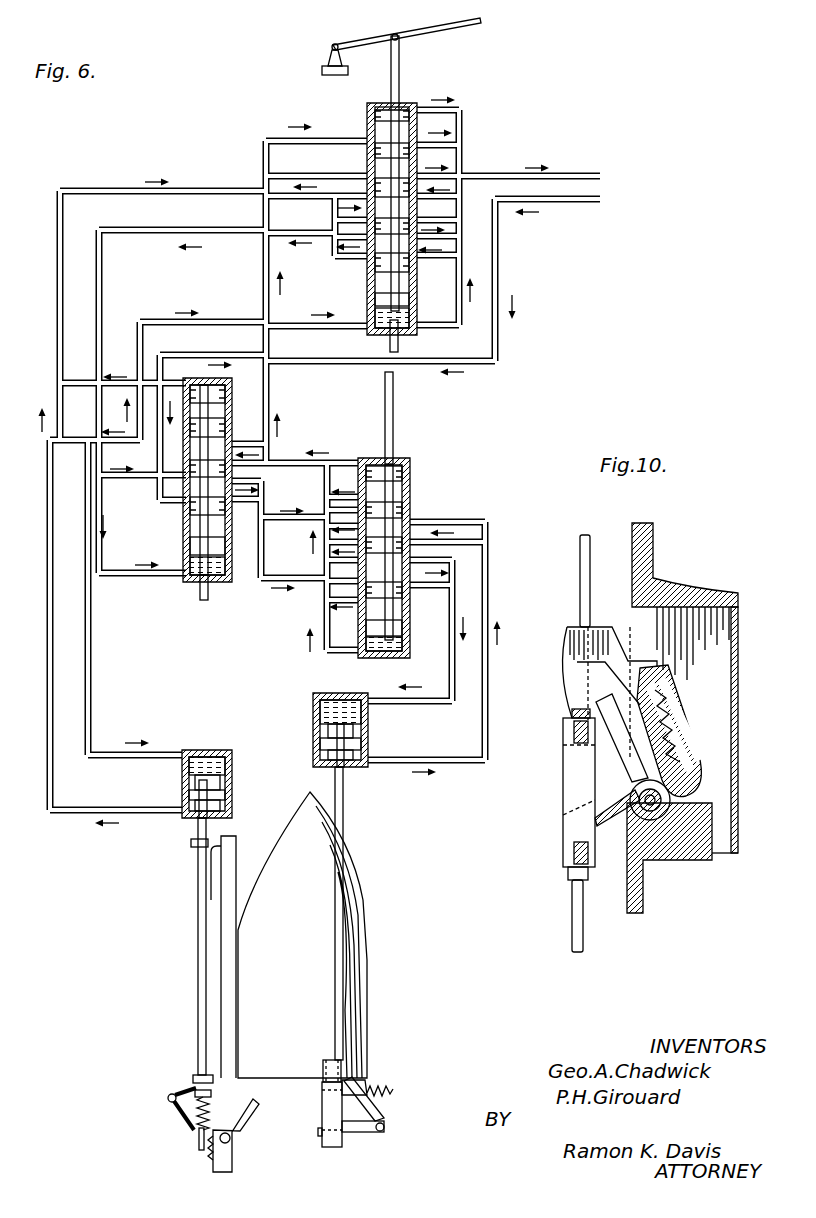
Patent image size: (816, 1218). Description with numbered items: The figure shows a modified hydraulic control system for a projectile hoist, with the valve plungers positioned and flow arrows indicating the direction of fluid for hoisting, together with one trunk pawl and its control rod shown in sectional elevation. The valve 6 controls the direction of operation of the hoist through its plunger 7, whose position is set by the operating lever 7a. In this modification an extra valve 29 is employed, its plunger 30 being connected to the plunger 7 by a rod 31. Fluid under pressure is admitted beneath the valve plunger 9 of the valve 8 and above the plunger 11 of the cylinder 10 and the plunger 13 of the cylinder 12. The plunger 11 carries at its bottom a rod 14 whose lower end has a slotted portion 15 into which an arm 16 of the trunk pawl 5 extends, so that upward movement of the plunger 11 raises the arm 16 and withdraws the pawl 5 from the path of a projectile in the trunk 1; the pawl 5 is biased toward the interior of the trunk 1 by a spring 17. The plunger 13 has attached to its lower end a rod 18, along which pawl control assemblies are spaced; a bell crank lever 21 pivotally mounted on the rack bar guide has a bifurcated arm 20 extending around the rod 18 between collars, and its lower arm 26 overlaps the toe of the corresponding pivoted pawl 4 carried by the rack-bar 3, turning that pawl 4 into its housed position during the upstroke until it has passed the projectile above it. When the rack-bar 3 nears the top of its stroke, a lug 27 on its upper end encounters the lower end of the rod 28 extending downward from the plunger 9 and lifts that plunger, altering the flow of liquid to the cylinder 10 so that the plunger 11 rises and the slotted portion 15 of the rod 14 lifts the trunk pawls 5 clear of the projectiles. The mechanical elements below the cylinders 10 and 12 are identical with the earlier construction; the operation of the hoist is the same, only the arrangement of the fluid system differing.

In FIG. 6, the operating lever 7a is at (453, 27).
In FIG. 6, the plunger 7 is at (382, 132).
In FIG. 6, the valve 6 is at (367, 180).
In FIG. 6, the rod 31 is at (399, 343).
In FIG. 6, the valve 8 is at (232, 392).
In FIG. 6, the valve plunger 9 is at (212, 432).
In FIG. 6, the rod 28 is at (198, 593).
In FIG. 6, the extra valve 29 is at (410, 473).
In FIG. 6, the plunger 30 is at (410, 507).
In FIG. 6, the cylinder 10 is at (315, 708).
In FIG. 6, the plunger 11 is at (368, 745).
In FIG. 6, the cylinder 12 is at (217, 753).
In FIG. 6, the plunger 13 is at (187, 797).
In FIG. 6, the lug 27 is at (192, 845).
In FIG. 6, the rack-bar 3 is at (230, 868).
In FIG. 6, the rod 14 is at (343, 823).
In FIG. 10, the rod 14 is at (582, 575).
In FIG. 6, the rod 18 is at (198, 995).
In FIG. 6, the bifurcated arm 20 is at (195, 1092).
In FIG. 6, the bell crank lever 21 is at (165, 1098).
In FIG. 6, the lower arm 26 is at (183, 1117).
In FIG. 6, the pawl 4 is at (243, 1127).
In FIG. 6, the trunk pawl 5 is at (365, 1090).
In FIG. 10, the trunk pawl 5 is at (570, 653).
In FIG. 6, the spring 17 is at (398, 1090).
In FIG. 10, the spring 17 is at (680, 740).
In FIG. 6, the slotted portion 15 is at (322, 1147).
In FIG. 10, the slotted portion 15 is at (568, 790).
In FIG. 6, the arm 16 is at (357, 1133).
In FIG. 10, the arm 16 is at (607, 817).
In FIG. 10, the trunk 1 is at (642, 904).